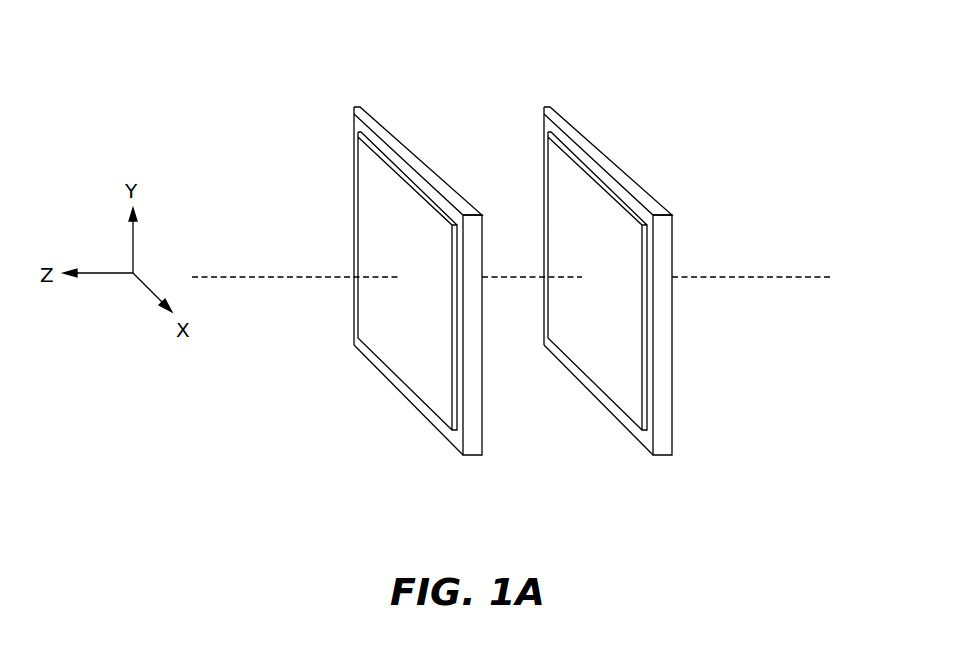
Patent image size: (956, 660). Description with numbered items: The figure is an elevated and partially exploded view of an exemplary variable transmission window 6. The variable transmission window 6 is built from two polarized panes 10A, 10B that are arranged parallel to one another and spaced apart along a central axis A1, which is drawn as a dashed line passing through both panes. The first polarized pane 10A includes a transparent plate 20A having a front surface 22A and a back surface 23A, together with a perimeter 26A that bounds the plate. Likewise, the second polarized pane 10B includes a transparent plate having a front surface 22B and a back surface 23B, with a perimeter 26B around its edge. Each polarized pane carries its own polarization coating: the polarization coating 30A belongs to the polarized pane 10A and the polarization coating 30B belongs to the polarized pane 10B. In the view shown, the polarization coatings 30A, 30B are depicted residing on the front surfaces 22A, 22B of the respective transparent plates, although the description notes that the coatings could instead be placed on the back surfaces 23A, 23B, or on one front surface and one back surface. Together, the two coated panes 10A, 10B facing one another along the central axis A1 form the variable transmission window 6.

The variable transmission window 6 is at (283, 48).
The polarized pane 10A is at (407, 105).
The polarized pane 10B is at (600, 102).
The transparent plate 20A is at (364, 106).
The front surface 22A is at (358, 117).
The front surface 22B is at (548, 117).
The polarization coating 30A is at (366, 173).
The polarization coating 30B is at (556, 173).
The back surface 23A is at (482, 427).
The back surface 23B is at (672, 427).
The perimeter 26A is at (469, 456).
The perimeter 26B is at (659, 456).
The central axis A1 is at (768, 278).